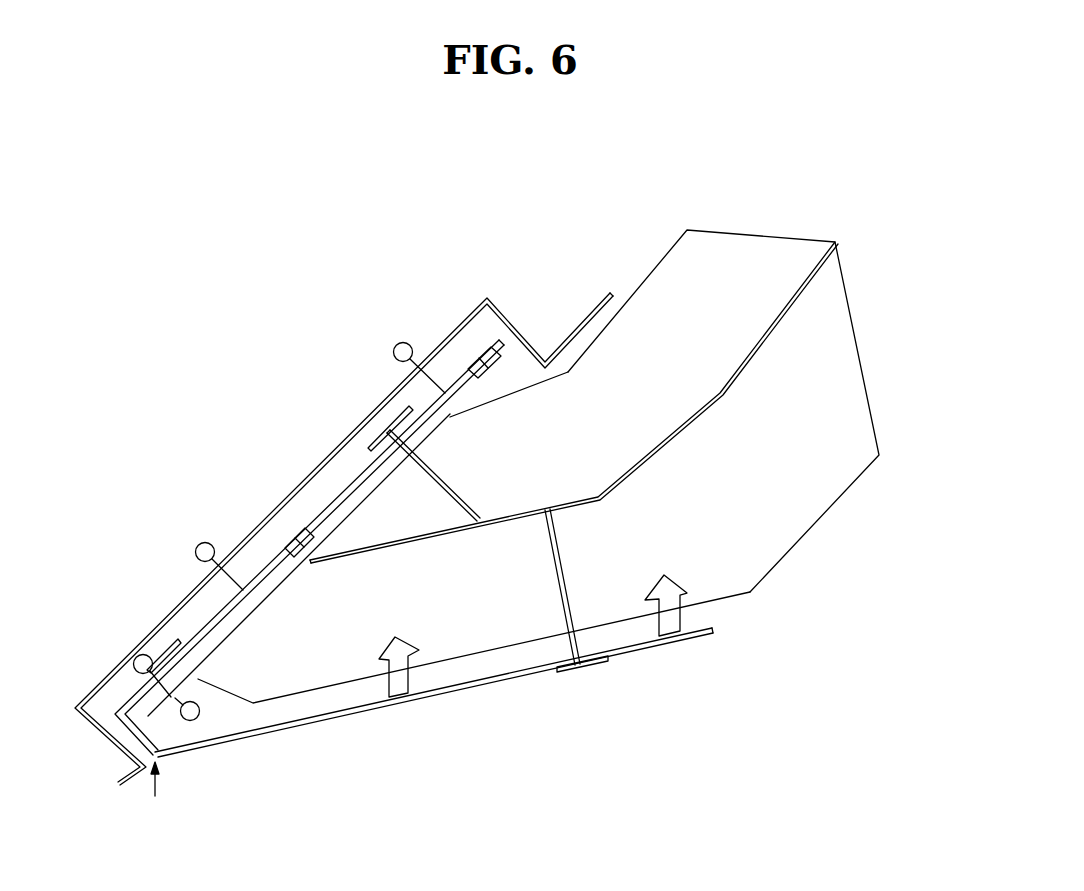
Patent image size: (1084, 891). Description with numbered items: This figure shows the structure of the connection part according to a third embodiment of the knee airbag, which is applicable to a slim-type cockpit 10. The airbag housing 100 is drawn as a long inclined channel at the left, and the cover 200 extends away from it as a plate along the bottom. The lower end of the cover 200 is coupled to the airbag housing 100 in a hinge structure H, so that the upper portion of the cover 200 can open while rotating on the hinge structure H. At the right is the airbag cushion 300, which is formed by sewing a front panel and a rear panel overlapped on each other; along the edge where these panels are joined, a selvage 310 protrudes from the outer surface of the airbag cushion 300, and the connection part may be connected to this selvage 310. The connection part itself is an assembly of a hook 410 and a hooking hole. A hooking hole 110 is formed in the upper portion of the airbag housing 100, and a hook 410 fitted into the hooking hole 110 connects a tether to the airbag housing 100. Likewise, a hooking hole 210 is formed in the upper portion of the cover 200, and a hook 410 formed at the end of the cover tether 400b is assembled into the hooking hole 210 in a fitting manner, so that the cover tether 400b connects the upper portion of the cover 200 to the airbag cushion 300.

The slim-type cockpit 10 is at (485, 297).
The airbag housing 100 is at (277, 560).
The hooking hole 110 is at (375, 443).
The cover 200 is at (457, 690).
The hooking hole 210 is at (572, 673).
The airbag cushion 300 is at (788, 525).
The selvage 310 is at (665, 440).
The cover tether 400b is at (567, 582).
The hook 410 is at (373, 450).
The hinge structure H is at (165, 815).